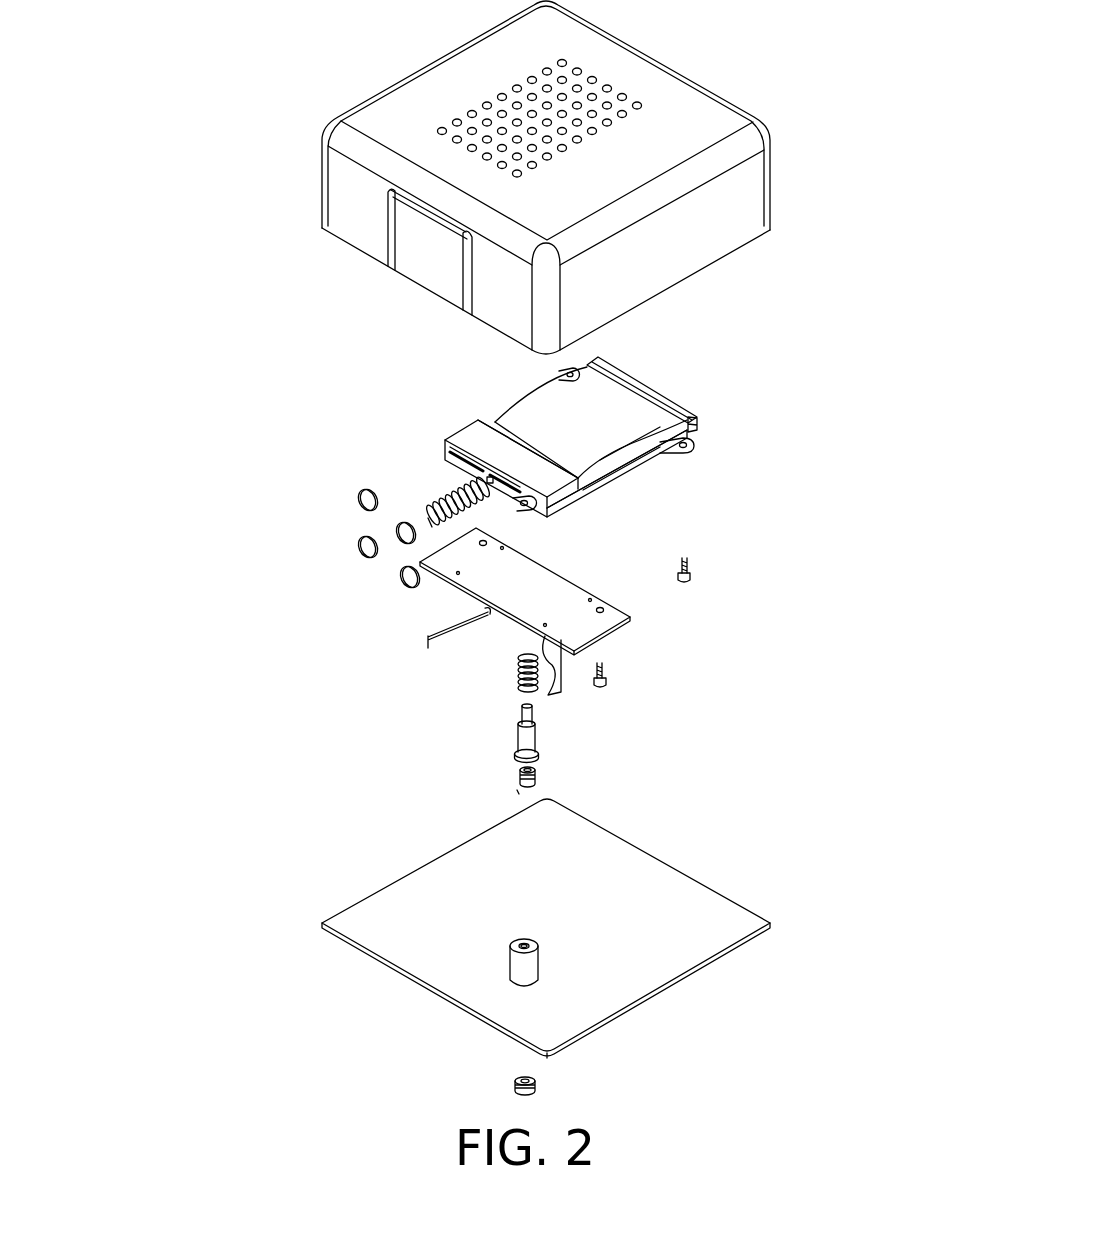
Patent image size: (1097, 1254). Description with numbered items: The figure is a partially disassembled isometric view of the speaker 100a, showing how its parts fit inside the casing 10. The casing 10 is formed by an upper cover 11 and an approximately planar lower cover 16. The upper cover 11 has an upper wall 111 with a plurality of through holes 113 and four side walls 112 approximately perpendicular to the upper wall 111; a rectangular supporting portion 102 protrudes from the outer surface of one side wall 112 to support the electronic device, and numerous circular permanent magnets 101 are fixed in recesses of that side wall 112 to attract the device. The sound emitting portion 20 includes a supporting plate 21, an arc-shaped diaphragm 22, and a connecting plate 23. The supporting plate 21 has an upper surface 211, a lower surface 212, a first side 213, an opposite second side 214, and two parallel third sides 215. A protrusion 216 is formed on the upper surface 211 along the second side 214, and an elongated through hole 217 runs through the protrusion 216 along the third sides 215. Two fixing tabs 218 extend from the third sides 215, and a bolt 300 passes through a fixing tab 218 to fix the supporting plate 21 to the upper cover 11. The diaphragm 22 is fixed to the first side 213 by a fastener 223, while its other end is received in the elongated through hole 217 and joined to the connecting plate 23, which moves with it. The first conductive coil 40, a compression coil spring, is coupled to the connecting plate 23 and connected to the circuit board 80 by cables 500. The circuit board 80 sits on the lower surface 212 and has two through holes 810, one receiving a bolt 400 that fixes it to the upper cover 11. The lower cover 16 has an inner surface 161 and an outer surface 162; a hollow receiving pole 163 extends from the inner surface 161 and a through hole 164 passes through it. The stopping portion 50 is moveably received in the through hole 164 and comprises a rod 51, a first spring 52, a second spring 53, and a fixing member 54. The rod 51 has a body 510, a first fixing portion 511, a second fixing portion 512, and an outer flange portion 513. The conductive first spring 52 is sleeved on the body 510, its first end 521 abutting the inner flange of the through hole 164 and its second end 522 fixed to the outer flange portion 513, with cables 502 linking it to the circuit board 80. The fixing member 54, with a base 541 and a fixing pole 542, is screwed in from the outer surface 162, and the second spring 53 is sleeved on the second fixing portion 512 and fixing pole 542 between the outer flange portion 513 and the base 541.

The speaker 100a is at (767, 88).
The casing 10 is at (740, 208).
The upper cover 11 is at (229, 147).
The upper wall 111 is at (385, 135).
The side walls 112 is at (352, 208).
The through holes 113 is at (610, 95).
The supporting portion 102 is at (413, 267).
The sound emitting portion 20 is at (735, 396).
The supporting plate 21 is at (558, 502).
The upper surface 211 is at (597, 475).
The lower surface 212 is at (618, 482).
The first side 213 is at (693, 433).
The second side 214 is at (443, 458).
The third sides 215 is at (495, 427).
The protrusion 216 is at (462, 437).
The elongated through hole 217 is at (448, 455).
The fixing tabs 218 is at (567, 372).
The diaphragm 22 is at (598, 395).
The fastener 223 is at (660, 393).
The connecting plate 23 is at (490, 487).
The permanent magnets 101 is at (358, 497).
The first conductive coil 40 is at (400, 556).
The circuit board 80 is at (552, 590).
The through holes 810 is at (488, 543).
The bolt 300 is at (693, 566).
The bolt 400 is at (603, 669).
The cables 500 is at (427, 638).
The cables 502 is at (560, 693).
The stopping portion 50 is at (366, 672).
The rod 51 is at (425, 718).
The first spring 52 is at (420, 660).
The first end 521 is at (518, 657).
The second end 522 is at (518, 685).
The first fixing portion 511 is at (518, 713).
The body 510 is at (520, 738).
The outer flange portion 513 is at (522, 757).
The second fixing portion 512 is at (522, 777).
The second spring 53 is at (517, 792).
The lower cover 16 is at (353, 953).
The inner surface 161 is at (693, 903).
The outer surface 162 is at (378, 972).
The receiving pole 163 is at (532, 965).
The through hole 164 is at (530, 947).
The fixing member 54 is at (416, 1040).
The base 541 is at (517, 1087).
The fixing pole 542 is at (522, 1080).